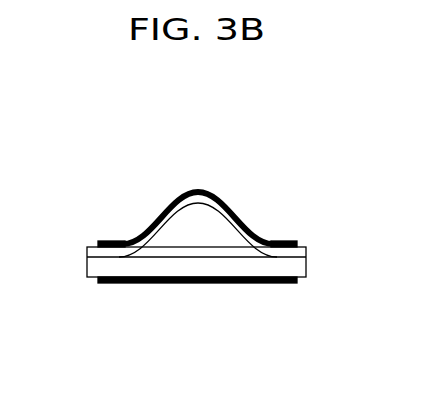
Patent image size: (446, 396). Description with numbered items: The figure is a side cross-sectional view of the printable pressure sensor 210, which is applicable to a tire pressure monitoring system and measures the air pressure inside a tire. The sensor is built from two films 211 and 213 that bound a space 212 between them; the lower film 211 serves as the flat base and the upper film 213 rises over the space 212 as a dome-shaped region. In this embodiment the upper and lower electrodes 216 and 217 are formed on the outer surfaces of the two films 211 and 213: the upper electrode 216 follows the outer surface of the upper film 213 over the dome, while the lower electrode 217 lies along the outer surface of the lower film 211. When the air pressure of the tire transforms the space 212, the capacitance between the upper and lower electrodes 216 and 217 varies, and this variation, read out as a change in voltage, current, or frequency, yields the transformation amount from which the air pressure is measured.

The printable pressure sensor 210 is at (122, 195).
The film 211 is at (302, 268).
The space 212 is at (217, 246).
The film 213 is at (306, 249).
The upper electrode 216 is at (262, 232).
The lower electrode 217 is at (197, 284).